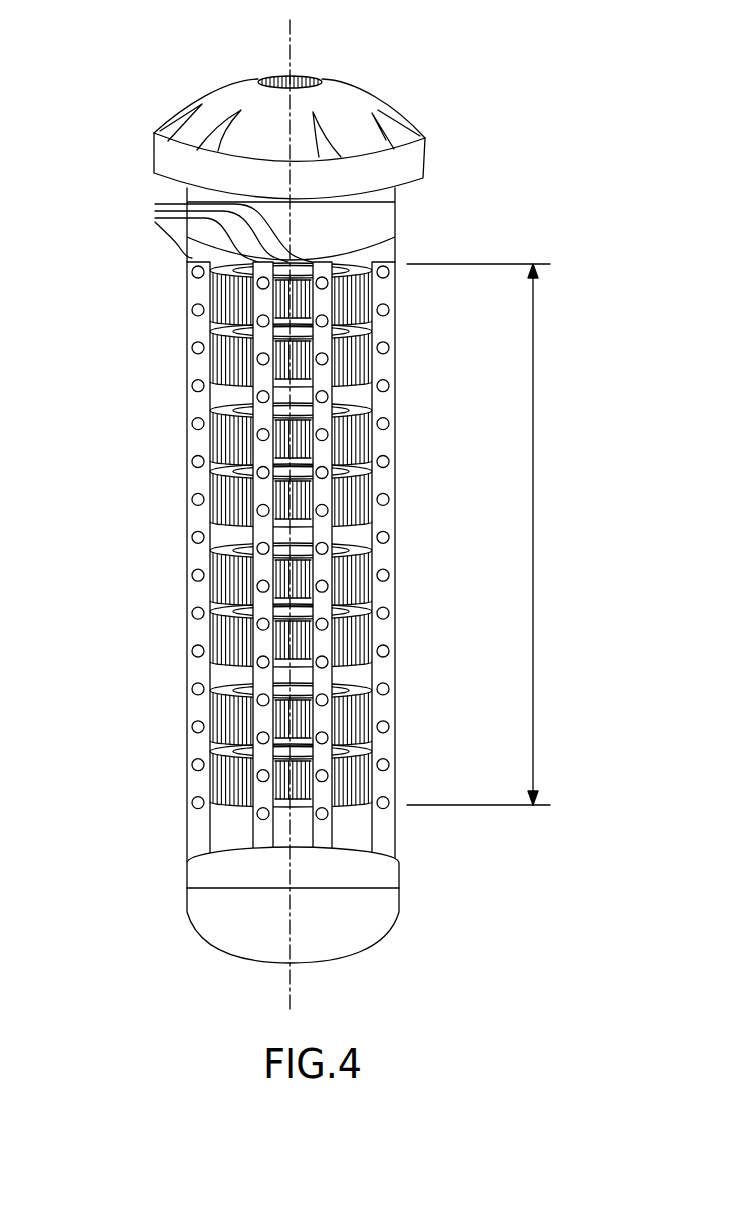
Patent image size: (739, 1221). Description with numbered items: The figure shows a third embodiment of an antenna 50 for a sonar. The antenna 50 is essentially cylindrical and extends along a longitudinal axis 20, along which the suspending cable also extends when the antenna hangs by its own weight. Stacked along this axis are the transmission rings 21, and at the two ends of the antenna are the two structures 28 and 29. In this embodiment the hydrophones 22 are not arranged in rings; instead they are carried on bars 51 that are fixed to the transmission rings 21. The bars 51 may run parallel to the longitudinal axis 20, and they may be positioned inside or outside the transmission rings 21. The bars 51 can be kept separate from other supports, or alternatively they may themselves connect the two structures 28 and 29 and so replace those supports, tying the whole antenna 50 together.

The antenna 50 is at (113, 77).
The longitudinal axis 20 is at (290, 53).
The structure 29 is at (368, 225).
The bar 51 is at (217, 230).
The transmission ring 21 is at (227, 292).
The hydrophone 22 is at (412, 445).
The structure 28 is at (380, 912).